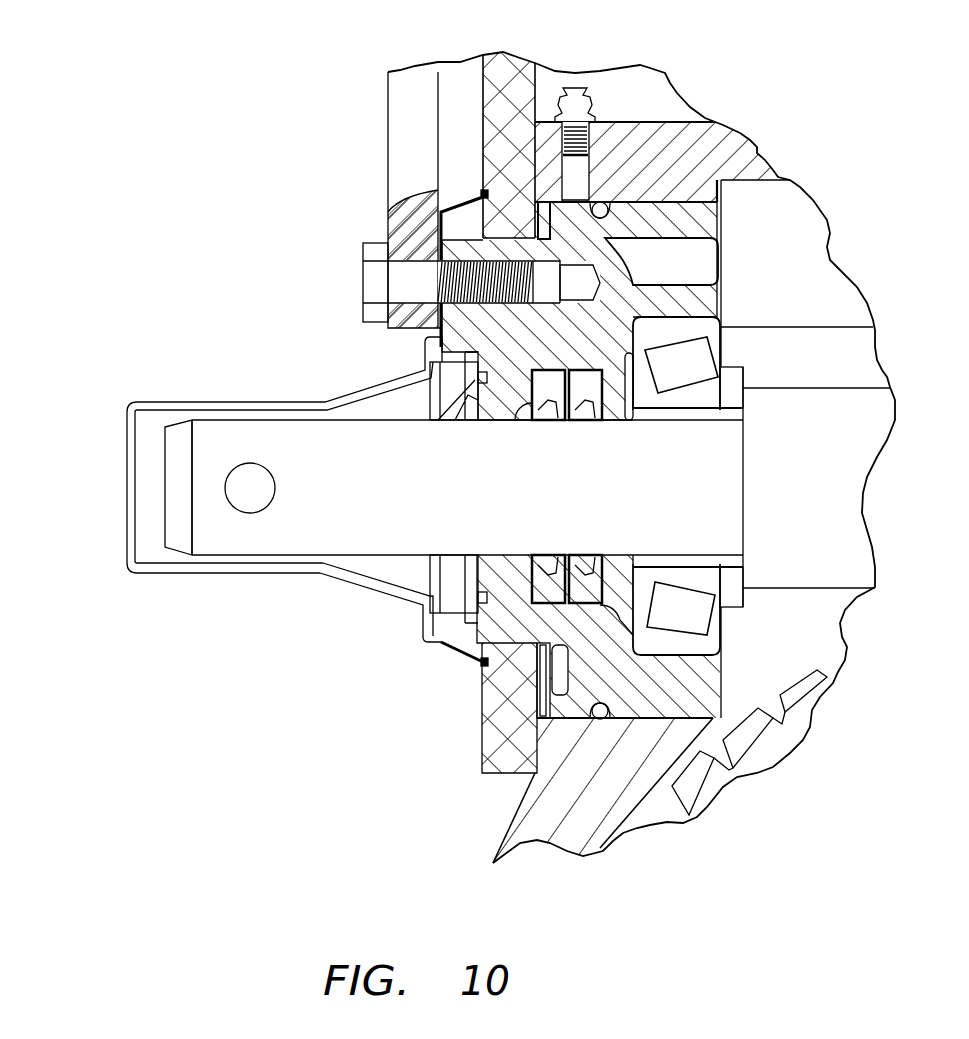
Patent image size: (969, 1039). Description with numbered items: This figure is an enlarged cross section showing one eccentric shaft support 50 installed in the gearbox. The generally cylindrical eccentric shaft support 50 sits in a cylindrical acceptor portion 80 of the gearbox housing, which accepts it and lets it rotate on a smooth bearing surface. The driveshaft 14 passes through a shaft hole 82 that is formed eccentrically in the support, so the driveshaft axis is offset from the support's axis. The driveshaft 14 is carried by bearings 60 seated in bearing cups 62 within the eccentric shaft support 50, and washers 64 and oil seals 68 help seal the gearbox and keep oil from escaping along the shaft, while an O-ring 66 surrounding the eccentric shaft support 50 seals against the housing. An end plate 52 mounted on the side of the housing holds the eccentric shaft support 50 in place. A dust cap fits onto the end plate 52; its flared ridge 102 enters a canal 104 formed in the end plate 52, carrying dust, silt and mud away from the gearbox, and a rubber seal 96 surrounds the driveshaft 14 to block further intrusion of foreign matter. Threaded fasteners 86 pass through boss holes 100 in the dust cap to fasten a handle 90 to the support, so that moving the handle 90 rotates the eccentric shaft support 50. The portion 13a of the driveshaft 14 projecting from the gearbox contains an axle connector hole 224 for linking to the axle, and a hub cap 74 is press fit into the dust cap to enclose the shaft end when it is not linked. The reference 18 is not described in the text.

The portion of the driveshaft 13a is at (297, 428).
The driveshaft 14 is at (140, 478).
The ring gear 18 is at (743, 710).
The eccentric shaft support 50 is at (690, 227).
The end plate 52 is at (515, 65).
The bearings 60 is at (686, 364).
The bearing cups 62 is at (677, 334).
The washers 64 is at (545, 212).
The O-ring 66 is at (597, 714).
The oil seals 68 is at (585, 597).
The hub cap 74 is at (125, 543).
The cylindrical acceptor portion 80 is at (664, 202).
The shaft hole 82 is at (495, 425).
The threaded fasteners 86 is at (363, 283).
The handle 90 is at (483, 190).
The rubber seal 96 is at (453, 563).
The boss holes 100 is at (442, 263).
The ridge 102 is at (480, 194).
The canal 104 is at (410, 108).
The axle connector hole 224 is at (250, 512).